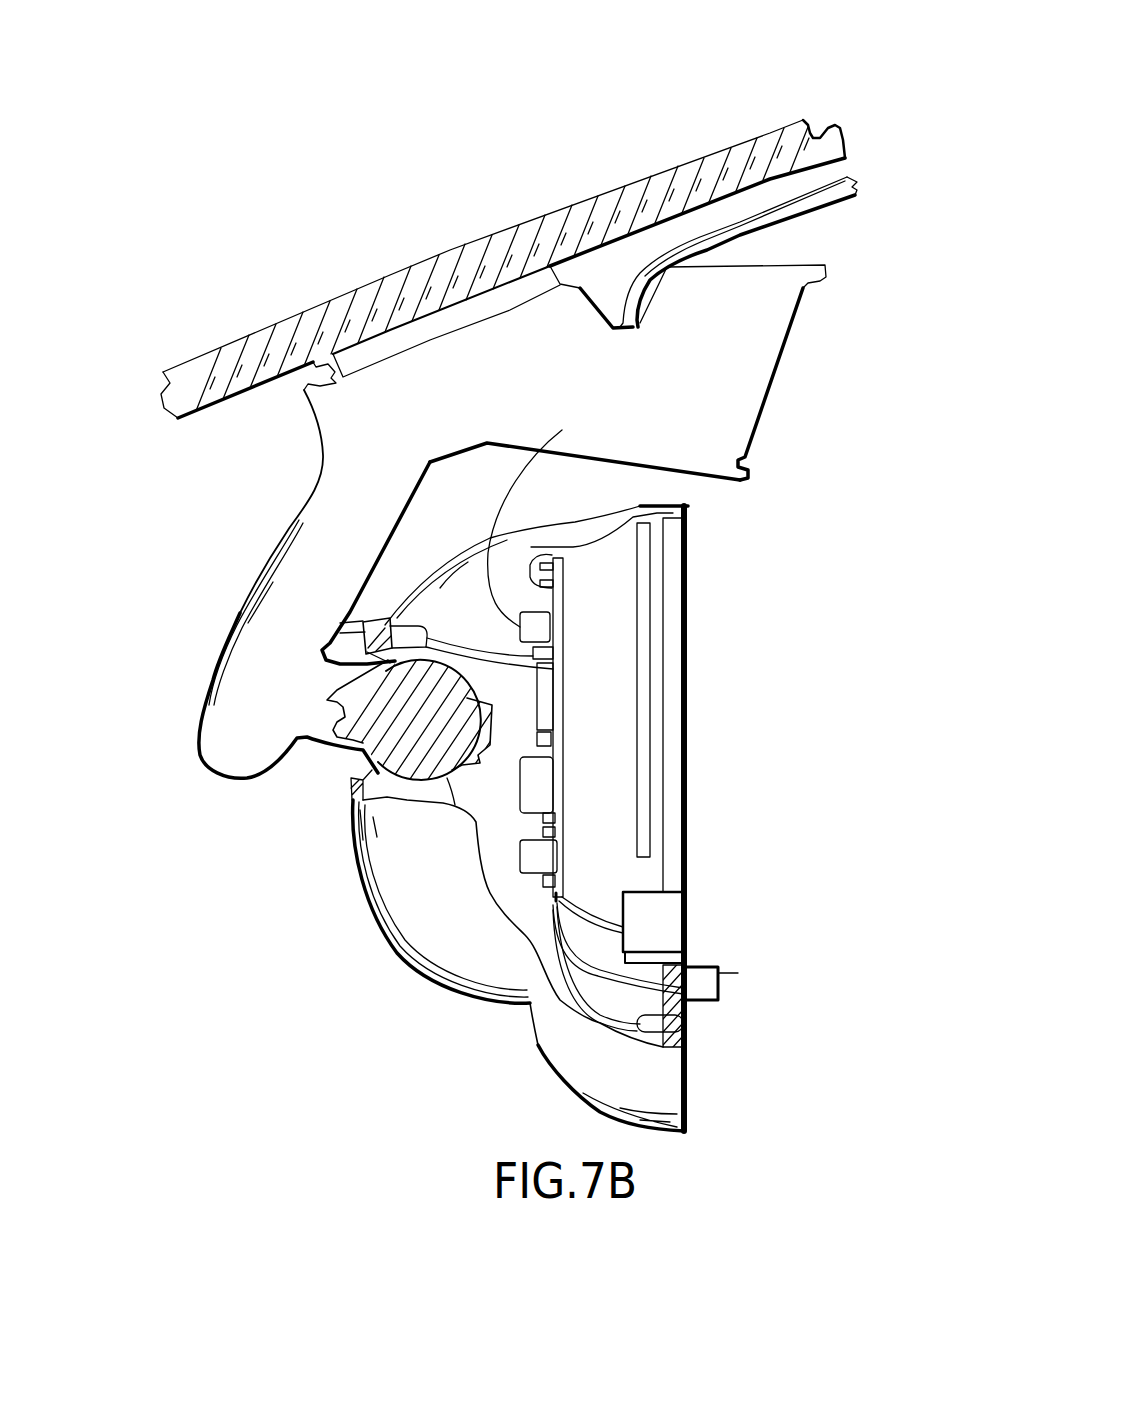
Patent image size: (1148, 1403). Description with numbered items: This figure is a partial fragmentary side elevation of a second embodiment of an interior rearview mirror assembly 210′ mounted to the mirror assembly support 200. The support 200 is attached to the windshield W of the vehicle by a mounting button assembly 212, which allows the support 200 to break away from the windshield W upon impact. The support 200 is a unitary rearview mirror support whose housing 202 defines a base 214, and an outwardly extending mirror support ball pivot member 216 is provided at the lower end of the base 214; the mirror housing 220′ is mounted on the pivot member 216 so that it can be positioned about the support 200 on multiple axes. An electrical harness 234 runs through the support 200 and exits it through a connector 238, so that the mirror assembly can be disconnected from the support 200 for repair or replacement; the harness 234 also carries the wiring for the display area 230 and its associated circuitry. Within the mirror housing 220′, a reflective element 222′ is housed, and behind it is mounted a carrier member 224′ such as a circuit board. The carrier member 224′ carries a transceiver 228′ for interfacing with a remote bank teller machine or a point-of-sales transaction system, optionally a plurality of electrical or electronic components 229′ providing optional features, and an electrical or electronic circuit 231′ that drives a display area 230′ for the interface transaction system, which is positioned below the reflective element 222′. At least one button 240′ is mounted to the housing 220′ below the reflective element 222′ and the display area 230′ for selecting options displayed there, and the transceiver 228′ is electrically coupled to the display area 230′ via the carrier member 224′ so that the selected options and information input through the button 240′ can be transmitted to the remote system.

The windshield W is at (787, 133).
The mirror assembly support 200 is at (591, 258).
The mounting button assembly 212 is at (363, 353).
The electrical harness 234 is at (772, 212).
The display area 230 is at (798, 425).
The electrical and/or electronic circuit 231′ is at (553, 512).
The electrical and/or electronic components 229′ is at (470, 634).
The transceiver 228′ is at (543, 553).
The connector 238 is at (380, 620).
The reflective element 222′ is at (643, 577).
The housing 202 is at (320, 536).
The carrier member 224′ is at (560, 629).
The base 214 is at (212, 657).
The mirror support ball pivot member 216 is at (363, 742).
The display area 230′ is at (721, 889).
The button 240′ is at (764, 973).
The interior rearview mirror assembly 210′ is at (366, 952).
The mirror housing 220′ is at (563, 1040).